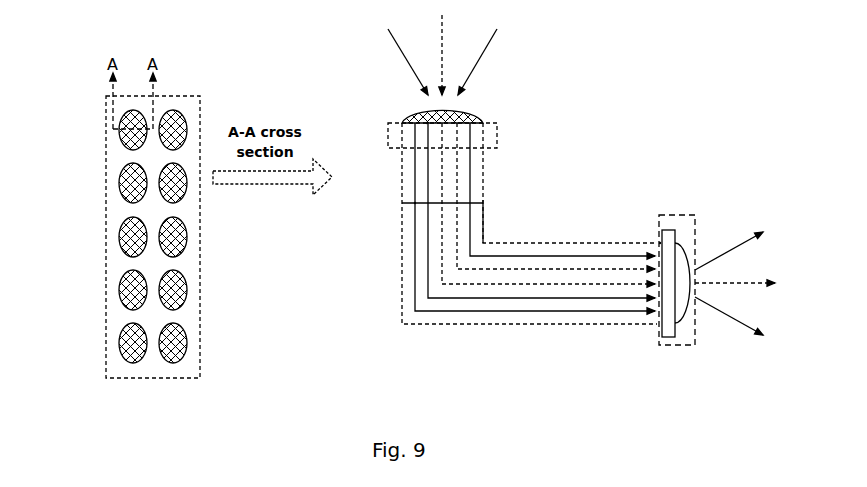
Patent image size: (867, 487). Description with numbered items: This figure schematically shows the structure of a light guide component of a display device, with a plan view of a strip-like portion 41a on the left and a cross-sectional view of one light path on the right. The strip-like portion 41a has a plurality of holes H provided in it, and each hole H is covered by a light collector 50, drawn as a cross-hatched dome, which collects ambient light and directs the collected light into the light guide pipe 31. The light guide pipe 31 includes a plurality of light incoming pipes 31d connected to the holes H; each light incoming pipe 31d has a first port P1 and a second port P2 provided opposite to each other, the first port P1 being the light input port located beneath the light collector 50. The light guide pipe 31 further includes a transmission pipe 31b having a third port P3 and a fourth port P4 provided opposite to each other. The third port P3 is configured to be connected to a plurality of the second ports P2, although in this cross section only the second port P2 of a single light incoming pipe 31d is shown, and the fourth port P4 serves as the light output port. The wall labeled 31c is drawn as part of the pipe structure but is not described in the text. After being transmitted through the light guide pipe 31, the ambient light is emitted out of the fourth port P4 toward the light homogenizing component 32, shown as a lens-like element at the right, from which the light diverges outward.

The strip-like portion 41a is at (117, 215).
The hole H is at (118, 243).
The light collector 50 is at (125, 289).
The light guide pipe 31 is at (493, 223).
The transmission pipe 31b is at (475, 231).
The outer wall of light guide 31c is at (415, 277).
The light incoming pipe 31d is at (475, 174).
The light homogenizing component 32 is at (683, 348).
The first port P1 is at (427, 123).
The second port P2 is at (428, 203).
The third port P3 is at (415, 203).
The fourth port P4 is at (660, 243).